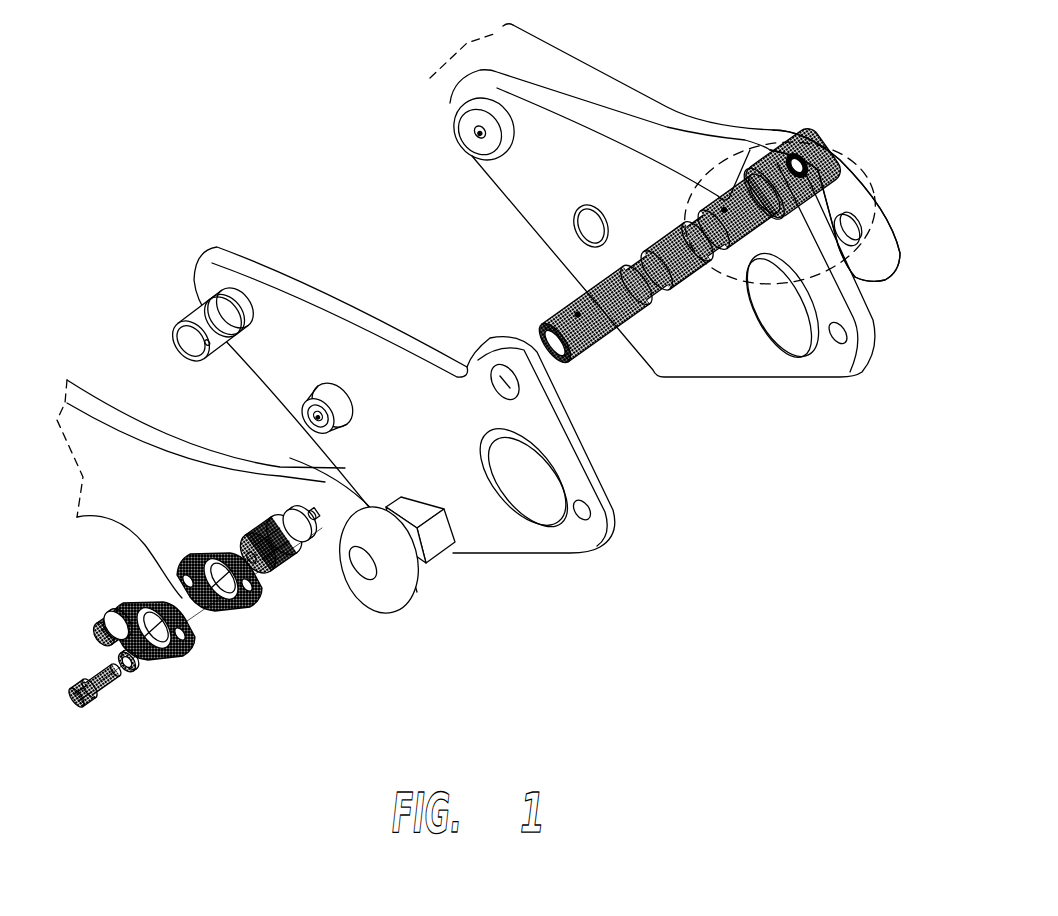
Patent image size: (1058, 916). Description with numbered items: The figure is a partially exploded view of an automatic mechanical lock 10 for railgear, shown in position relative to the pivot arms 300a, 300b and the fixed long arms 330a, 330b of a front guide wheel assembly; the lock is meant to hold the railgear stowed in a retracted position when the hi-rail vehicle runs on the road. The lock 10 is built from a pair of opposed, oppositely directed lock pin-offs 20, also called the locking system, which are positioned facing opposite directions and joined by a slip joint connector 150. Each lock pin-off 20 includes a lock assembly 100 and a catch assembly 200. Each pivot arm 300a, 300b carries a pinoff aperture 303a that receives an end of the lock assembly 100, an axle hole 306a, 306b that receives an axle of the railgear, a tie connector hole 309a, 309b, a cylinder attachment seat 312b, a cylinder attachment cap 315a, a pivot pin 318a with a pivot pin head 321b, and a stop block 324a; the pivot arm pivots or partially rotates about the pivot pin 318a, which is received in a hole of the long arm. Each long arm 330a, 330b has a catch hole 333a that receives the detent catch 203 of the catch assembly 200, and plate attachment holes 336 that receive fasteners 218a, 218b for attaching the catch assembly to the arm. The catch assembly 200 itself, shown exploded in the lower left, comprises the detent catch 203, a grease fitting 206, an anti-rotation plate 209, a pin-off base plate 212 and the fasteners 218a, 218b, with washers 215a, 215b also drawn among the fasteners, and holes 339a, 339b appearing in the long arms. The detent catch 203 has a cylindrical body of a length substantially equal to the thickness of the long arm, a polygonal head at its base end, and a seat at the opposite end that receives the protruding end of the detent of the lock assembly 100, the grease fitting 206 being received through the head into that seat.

The automatic mechanical lock 10 is at (250, 157).
The lock pin-off 20 is at (758, 140).
The lock assembly 100 is at (672, 205).
The slip joint connector 150 is at (688, 302).
The catch assembly 200 is at (794, 128).
The detent catch 203 is at (268, 518).
The grease fitting 206 is at (249, 545).
The anti-rotation plate 209 is at (235, 605).
The pin-off base plate 212 is at (152, 655).
The washer 215a is at (118, 608).
The washer 215b is at (133, 670).
The fastener 218a is at (103, 630).
The fastener 218b is at (94, 703).
The pivot arm 300a is at (596, 549).
The pivot arm 300b is at (851, 375).
The pinoff aperture 303a is at (496, 390).
The axle hole 306a is at (527, 522).
The axle hole 306b is at (790, 355).
The tie connector hole 309a is at (590, 506).
The tie connector hole 309b is at (848, 330).
The cylinder attachment seat 312b is at (580, 246).
The cylinder attachment cap 315a is at (335, 385).
The pivot pin 318a is at (183, 310).
The pivot pin head 321b is at (470, 152).
The stop block 324a is at (449, 560).
The long arm 330a is at (406, 605).
The long arm 330b is at (836, 150).
The catch hole 333a is at (279, 505).
The plate attachment hole 336 is at (326, 523).
The lug hole 339a is at (350, 575).
The lug hole 339b is at (850, 220).